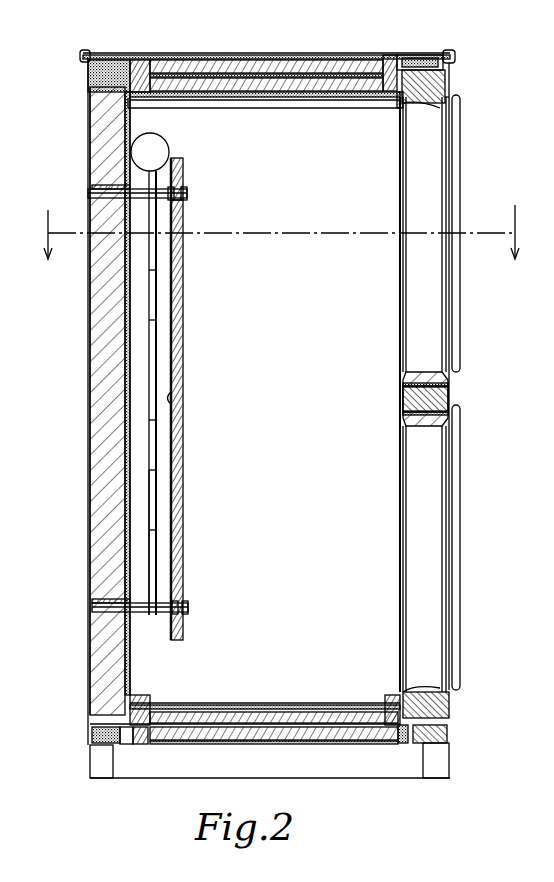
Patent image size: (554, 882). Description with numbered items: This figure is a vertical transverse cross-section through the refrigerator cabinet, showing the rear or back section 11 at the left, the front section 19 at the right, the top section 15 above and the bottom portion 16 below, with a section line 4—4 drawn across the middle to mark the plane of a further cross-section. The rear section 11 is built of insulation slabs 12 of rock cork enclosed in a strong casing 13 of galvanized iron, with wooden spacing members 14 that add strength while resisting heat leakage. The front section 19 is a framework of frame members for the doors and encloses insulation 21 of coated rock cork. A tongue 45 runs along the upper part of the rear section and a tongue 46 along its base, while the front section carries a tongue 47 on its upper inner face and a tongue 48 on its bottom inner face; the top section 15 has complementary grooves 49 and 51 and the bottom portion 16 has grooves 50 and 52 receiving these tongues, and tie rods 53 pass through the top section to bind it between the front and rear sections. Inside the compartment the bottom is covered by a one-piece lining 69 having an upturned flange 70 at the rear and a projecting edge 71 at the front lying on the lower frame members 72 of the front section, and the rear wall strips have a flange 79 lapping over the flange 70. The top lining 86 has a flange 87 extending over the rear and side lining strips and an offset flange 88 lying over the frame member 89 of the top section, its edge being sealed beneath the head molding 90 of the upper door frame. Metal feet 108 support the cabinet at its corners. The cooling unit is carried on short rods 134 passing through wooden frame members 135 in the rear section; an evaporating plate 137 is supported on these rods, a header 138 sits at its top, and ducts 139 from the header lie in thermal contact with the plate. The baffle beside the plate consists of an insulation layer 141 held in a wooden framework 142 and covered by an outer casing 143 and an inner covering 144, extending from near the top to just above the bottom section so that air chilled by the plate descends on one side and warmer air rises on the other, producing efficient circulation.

The section line 4 is at (280, 219).
The rear section 11 is at (105, 363).
The insulation slabs 12 is at (95, 455).
The casing 13 is at (120, 306).
The spacing members 14 is at (105, 603).
The top section 15 is at (248, 62).
The bottom portion 16 is at (305, 735).
The front section 19 is at (440, 90).
The insulation 21 is at (450, 392).
The tongue 45 is at (118, 62).
The tongue 46 is at (125, 745).
The tongue 47 is at (418, 58).
The tongue 48 is at (428, 744).
The groove 49 is at (140, 64).
The groove 50 is at (135, 745).
The groove 51 is at (390, 60).
The groove 52 is at (402, 744).
The tie rods 53 is at (178, 82).
The bottom lining 69 is at (192, 718).
The flange 70 is at (140, 710).
The projecting edge 71 is at (395, 705).
The lower frame members 72 is at (450, 708).
The flange 79 is at (238, 708).
The top lining 86 is at (250, 97).
The flange 87 is at (276, 104).
The offset flange 88 is at (398, 104).
The frame member 89 is at (455, 101).
The head molding 90 is at (440, 108).
The feet 108 is at (447, 748).
The short rods 134 is at (90, 190).
The wooden frame members 135 is at (100, 187).
The evaporating plate 137 is at (157, 420).
The header 138 is at (157, 147).
The ducts 139 is at (153, 467).
The inner layer of insulation 141 is at (183, 315).
The wooden framework 142 is at (183, 182).
The outer casing 143 is at (183, 368).
The inner covering 144 is at (170, 397).